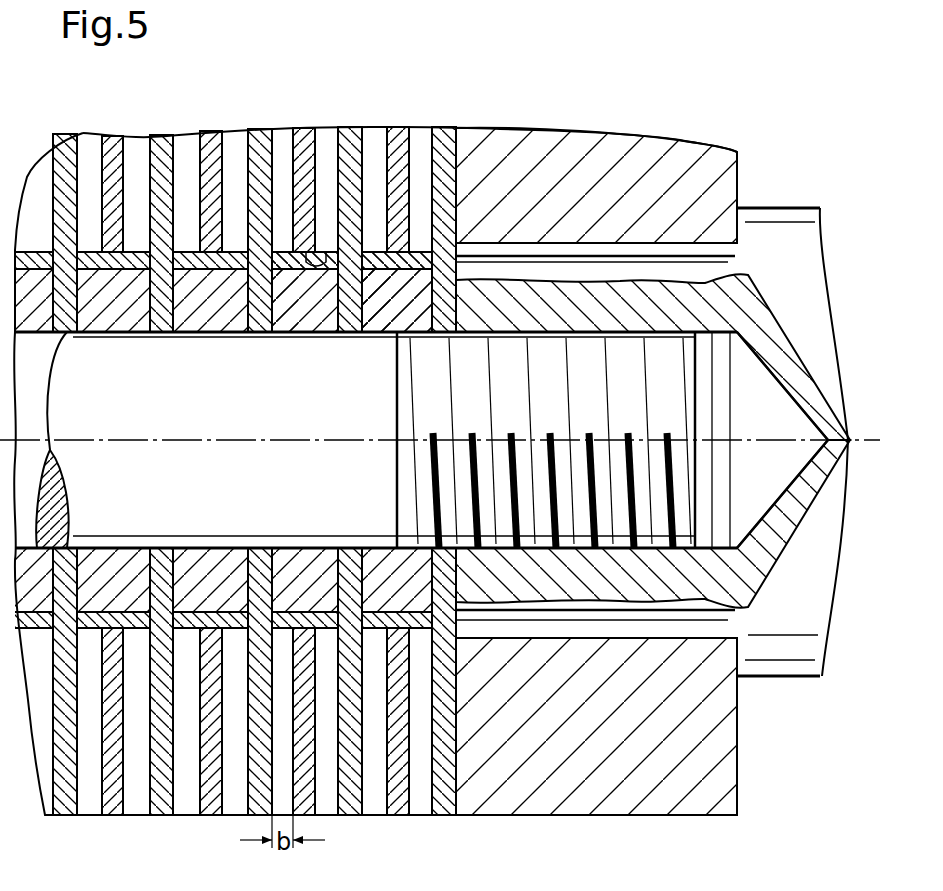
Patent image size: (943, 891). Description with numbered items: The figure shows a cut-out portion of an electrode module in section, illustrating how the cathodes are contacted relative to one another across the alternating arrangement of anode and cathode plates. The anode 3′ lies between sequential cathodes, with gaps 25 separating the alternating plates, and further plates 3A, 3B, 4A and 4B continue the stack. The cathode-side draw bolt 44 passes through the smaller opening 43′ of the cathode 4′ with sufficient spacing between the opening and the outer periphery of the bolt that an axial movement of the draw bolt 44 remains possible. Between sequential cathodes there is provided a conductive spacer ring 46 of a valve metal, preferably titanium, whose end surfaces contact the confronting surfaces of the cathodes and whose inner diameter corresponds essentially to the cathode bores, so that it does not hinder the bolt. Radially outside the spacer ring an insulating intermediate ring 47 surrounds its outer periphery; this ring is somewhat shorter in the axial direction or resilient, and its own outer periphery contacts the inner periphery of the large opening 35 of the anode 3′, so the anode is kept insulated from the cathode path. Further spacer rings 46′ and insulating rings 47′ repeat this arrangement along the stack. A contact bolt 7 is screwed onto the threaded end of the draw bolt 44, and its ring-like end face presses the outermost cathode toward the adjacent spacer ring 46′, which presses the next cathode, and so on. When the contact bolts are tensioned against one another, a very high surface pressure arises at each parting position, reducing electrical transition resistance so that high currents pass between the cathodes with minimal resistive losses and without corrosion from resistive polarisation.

The anode 3′ is at (302, 128).
The inner clutch plate 3A is at (412, 790).
The inner clutch plate 3B is at (385, 794).
The cathode 4′ is at (263, 128).
The outer clutch plate 4A is at (430, 792).
The outer clutch plate 4B is at (366, 784).
The contact bolt 7 is at (778, 653).
The gap 25 is at (375, 755).
The large opening of the anode 35 is at (322, 252).
The smaller opening of the cathode 43′ is at (261, 337).
The draw bolt 44 is at (207, 497).
The conductive spacer ring 46 is at (290, 323).
The conductive spacer ring 46′ is at (388, 310).
The insulating intermediate ring 47 is at (105, 266).
The insulating intermediate ring 47′ is at (297, 256).